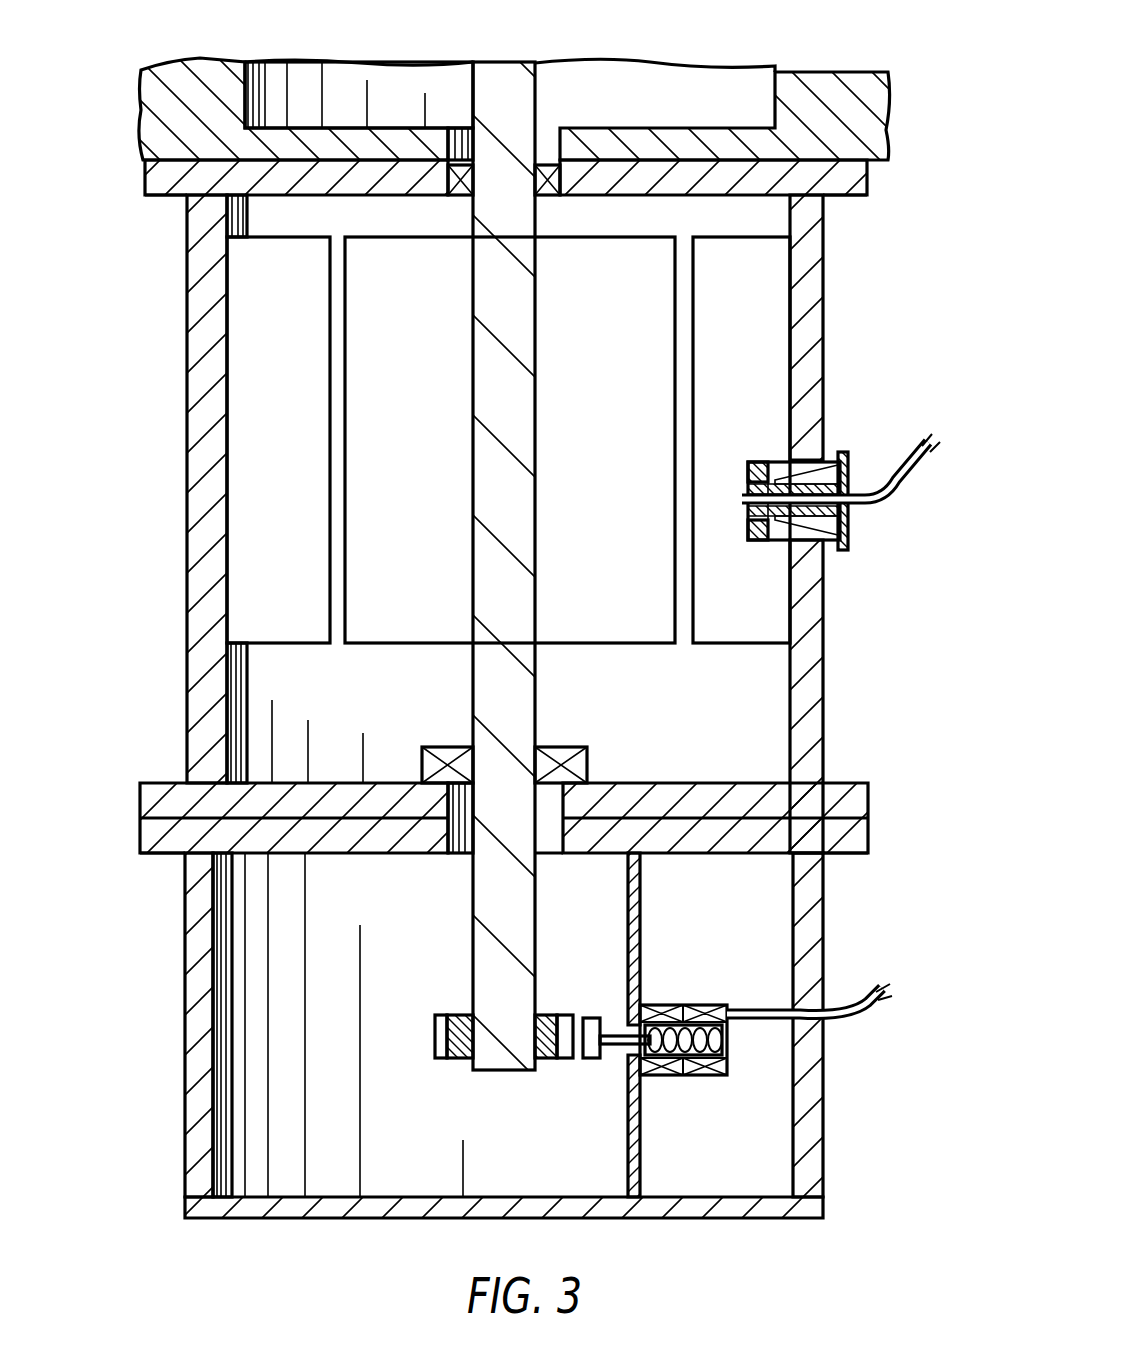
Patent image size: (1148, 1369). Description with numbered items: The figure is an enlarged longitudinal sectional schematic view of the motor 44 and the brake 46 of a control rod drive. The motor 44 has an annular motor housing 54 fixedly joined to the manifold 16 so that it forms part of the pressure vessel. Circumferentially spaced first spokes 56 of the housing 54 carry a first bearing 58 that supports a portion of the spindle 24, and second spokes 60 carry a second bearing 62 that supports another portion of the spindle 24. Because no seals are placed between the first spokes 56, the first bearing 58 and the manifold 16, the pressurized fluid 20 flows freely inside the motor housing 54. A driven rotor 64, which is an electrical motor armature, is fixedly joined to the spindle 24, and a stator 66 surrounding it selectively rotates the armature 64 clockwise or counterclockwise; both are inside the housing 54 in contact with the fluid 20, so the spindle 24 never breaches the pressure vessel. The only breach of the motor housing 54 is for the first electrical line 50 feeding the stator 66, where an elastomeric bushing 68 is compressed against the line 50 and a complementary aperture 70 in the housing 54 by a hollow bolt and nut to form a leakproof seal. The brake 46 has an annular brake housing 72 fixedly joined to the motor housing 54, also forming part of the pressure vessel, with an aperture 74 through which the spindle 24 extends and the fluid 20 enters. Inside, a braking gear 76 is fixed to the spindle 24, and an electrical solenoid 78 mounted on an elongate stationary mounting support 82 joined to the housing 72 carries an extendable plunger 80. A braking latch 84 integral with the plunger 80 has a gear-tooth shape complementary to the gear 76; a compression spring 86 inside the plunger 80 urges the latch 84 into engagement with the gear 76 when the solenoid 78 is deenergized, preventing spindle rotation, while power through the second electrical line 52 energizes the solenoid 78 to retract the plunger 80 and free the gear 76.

The manifold 16 is at (230, 60).
The pressurized fluid 20 is at (366, 85).
The spindle 24 is at (540, 118).
The motor 44 is at (170, 477).
The brake 46 is at (170, 997).
The first electrical line 50 is at (890, 498).
The second electrical line 52 is at (852, 994).
The motor housing 54 is at (826, 312).
The first spokes 56 is at (685, 200).
The first bearing 58 is at (548, 200).
The second spokes 60 is at (650, 783).
The second bearing 62 is at (578, 748).
The driven rotor 64 is at (410, 646).
The stator 66 is at (296, 646).
The elastomeric bushing 68 is at (845, 548).
The aperture 70 is at (778, 542).
The brake housing 72 is at (825, 905).
The aperture 74 is at (458, 858).
The braking gear 76 is at (463, 1062).
The electrical solenoid 78 is at (692, 1078).
The plunger 80 is at (620, 1050).
The mounting support 82 is at (648, 946).
The braking latch 84 is at (591, 1060).
The compression spring 86 is at (722, 1042).